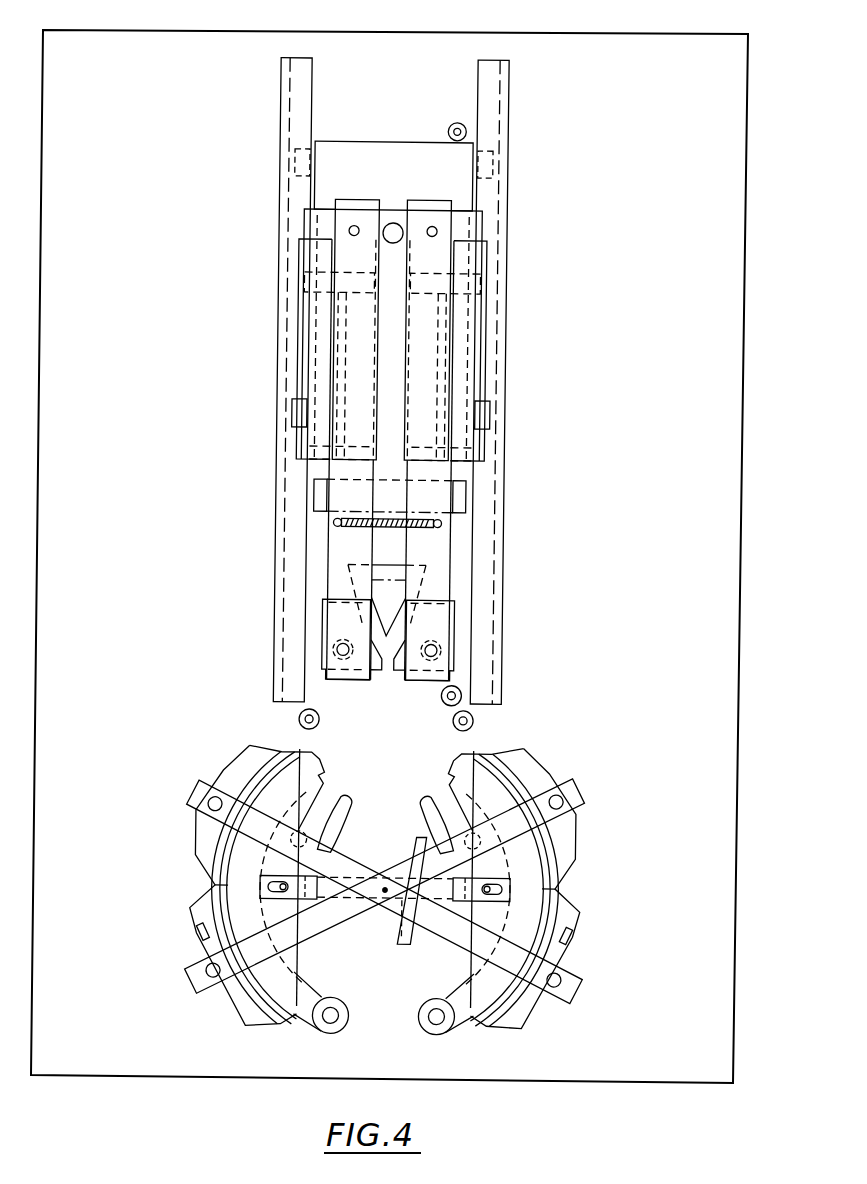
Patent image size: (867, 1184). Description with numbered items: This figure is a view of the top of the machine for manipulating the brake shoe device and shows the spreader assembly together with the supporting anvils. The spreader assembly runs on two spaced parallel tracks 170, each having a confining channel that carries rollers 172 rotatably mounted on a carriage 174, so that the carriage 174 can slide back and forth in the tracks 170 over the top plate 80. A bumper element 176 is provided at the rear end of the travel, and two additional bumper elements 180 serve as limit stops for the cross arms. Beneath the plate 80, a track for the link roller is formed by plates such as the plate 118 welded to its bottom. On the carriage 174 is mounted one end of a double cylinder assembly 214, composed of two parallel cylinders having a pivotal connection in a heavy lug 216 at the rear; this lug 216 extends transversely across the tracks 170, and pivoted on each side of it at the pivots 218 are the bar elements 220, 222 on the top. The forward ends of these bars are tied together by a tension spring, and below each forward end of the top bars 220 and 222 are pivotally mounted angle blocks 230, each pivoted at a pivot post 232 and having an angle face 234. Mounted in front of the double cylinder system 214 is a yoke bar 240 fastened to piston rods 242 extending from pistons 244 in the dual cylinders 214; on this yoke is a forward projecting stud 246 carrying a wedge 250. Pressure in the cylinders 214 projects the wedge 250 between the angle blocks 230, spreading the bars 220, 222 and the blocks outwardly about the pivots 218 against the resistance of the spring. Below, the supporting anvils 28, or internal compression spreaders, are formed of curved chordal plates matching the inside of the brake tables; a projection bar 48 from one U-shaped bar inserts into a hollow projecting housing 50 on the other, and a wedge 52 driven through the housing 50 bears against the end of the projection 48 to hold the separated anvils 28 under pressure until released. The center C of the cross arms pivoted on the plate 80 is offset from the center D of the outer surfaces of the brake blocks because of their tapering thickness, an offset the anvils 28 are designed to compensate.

The supporting anvil 28 is at (326, 776).
The projection bar 48 is at (385, 878).
The hollow projecting housing 50 is at (347, 905).
The wedge 52 is at (406, 945).
The top plate 80 is at (722, 914).
The track plate 118 is at (464, 693).
The track 170 is at (280, 311).
The roller 172 is at (496, 163).
The carriage 174 is at (361, 162).
The bumper element 176 is at (448, 126).
The bumper element 180 is at (302, 720).
The double cylinder assembly 214 is at (296, 388).
The heavy lug 216 is at (317, 233).
The pivot 218 is at (436, 231).
The bar element 220 is at (430, 340).
The bar element 222 is at (360, 349).
The angle block 230 is at (323, 617).
The pivot post 232 is at (343, 650).
The angle face 234 is at (345, 598).
The yoke bar 240 is at (463, 498).
The piston rod 242 is at (327, 467).
The piston 244 is at (318, 283).
The stud 246 is at (388, 547).
The wedge 250 is at (365, 600).
The center of the cross arms C is at (386, 893).
The center of the outer surfaces of the brake blocks D is at (386, 887).